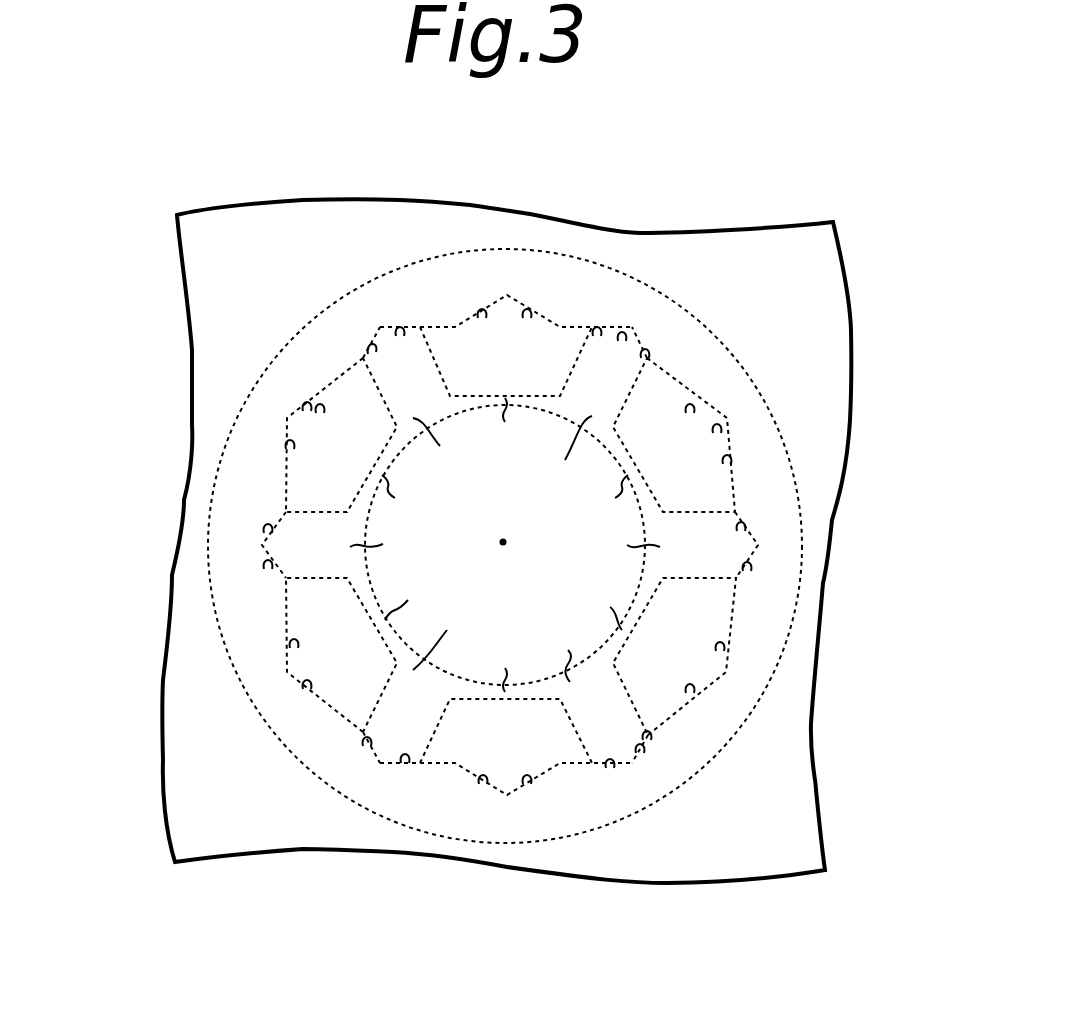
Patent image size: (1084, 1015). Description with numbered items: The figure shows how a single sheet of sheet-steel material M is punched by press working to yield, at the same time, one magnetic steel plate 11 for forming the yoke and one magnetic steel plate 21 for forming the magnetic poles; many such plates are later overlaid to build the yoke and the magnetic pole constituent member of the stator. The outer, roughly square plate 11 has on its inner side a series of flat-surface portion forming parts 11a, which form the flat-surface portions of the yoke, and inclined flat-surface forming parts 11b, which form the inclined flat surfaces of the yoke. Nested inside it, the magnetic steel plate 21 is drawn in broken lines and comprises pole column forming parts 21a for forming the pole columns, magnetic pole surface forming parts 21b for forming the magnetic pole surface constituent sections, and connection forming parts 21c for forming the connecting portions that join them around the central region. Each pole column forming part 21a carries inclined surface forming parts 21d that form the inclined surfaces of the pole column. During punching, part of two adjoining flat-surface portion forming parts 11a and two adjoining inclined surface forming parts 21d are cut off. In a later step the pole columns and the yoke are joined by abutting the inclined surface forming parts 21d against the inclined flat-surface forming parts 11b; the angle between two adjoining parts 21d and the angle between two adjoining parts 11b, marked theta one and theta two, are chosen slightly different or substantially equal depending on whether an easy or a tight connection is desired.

The magnetic steel plate for forming the yoke 11 is at (697, 345).
The flat-surface portion forming part 11a is at (368, 350).
The inclined flat-surface forming part 11b is at (482, 310).
The magnetic steel plate for forming magnetic poles 21 is at (687, 558).
The pole column forming part 21a is at (405, 370).
The magnetic pole surface forming part 21b is at (505, 549).
The connection forming part 21c is at (507, 545).
The inclined surface forming part 21d is at (646, 356).
The sheet-steel material M is at (205, 243).